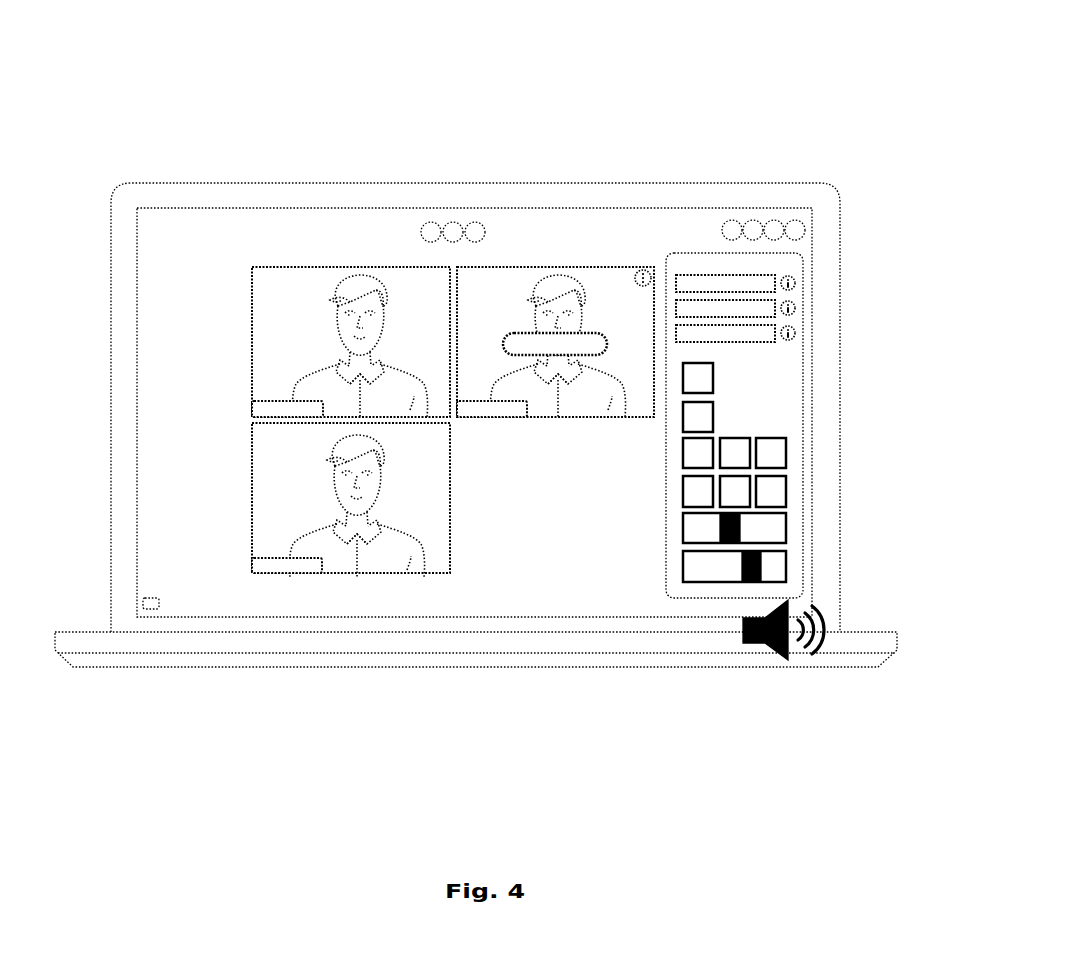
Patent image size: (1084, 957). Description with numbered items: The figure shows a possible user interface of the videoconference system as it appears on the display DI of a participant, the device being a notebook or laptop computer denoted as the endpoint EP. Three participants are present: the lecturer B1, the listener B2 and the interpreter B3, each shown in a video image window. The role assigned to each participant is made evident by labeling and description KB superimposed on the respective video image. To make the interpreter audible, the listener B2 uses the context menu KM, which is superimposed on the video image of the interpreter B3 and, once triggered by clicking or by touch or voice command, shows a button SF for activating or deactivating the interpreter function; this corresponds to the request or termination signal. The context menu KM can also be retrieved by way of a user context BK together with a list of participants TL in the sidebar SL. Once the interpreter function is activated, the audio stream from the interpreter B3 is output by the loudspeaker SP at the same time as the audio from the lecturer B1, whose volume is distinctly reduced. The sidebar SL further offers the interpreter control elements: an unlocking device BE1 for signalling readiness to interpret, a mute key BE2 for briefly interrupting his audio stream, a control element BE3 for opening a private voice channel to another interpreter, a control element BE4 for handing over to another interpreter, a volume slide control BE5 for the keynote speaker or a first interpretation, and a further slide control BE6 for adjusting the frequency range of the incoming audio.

The display DI is at (220, 208).
The endpoint EP is at (540, 150).
The context menu KM is at (643, 267).
The list of participants TL is at (720, 262).
The user context BK is at (797, 283).
The participant (lecturer) B1 is at (255, 338).
The participant (listener) B2 is at (255, 496).
The participant (interpreter) B3 is at (610, 400).
The labeling and description KB is at (252, 411).
The button SF is at (555, 357).
The unlocking device BE1 is at (714, 383).
The mute key BE2 is at (714, 418).
The control element for opening a private voice channel BE3 is at (683, 465).
The control element for handing over to another interpreter BE4 is at (683, 493).
The volume slide control BE5 is at (683, 528).
The slide control for frequency range BE6 is at (683, 567).
The sidebar SL is at (808, 455).
The loudspeaker SP is at (840, 618).